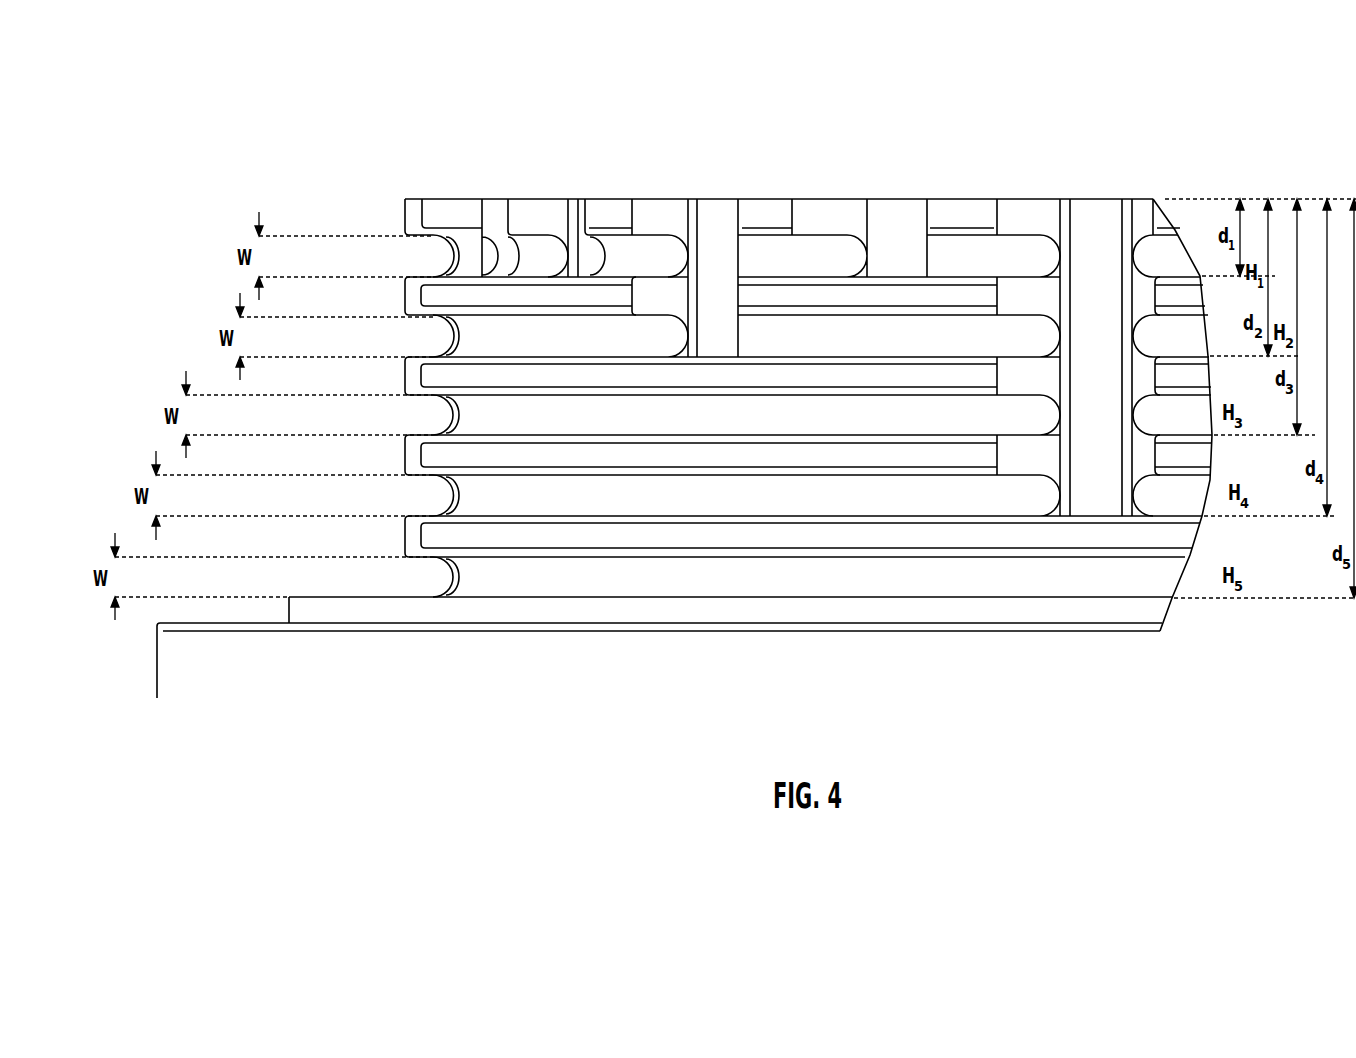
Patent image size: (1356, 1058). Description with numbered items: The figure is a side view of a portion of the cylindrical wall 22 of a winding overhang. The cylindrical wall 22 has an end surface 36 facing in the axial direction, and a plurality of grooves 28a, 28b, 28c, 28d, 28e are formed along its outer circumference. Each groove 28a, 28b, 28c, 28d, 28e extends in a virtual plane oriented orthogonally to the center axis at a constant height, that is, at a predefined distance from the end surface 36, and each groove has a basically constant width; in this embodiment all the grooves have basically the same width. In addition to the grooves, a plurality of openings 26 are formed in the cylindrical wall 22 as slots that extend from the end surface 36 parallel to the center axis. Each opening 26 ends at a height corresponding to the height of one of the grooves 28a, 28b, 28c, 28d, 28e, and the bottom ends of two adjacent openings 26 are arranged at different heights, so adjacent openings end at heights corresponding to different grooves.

The cylindrical wall 22 is at (462, 167).
The openings 26 is at (557, 185).
The end surface 36 is at (985, 192).
The groove 28a is at (410, 252).
The groove 28b is at (410, 332).
The groove 28c is at (410, 412).
The groove 28d is at (410, 490).
The groove 28e is at (410, 570).